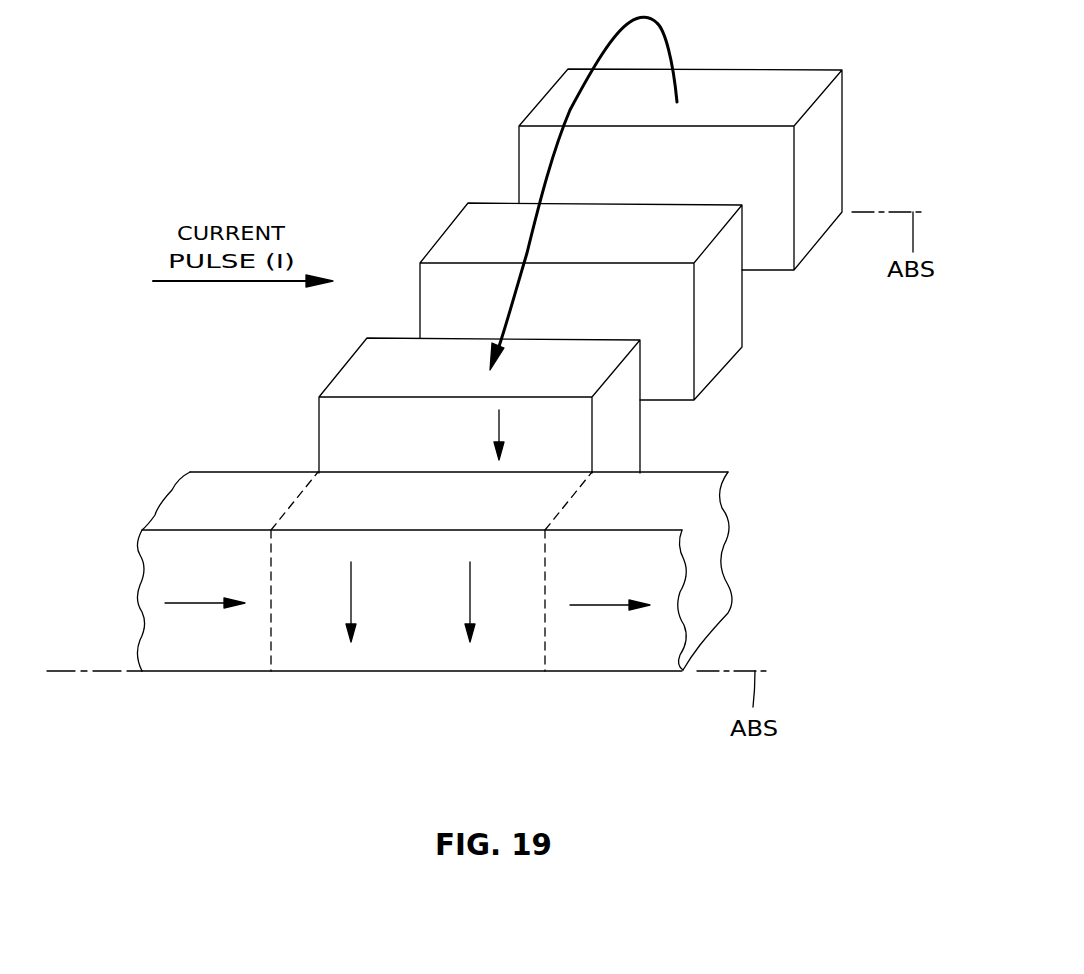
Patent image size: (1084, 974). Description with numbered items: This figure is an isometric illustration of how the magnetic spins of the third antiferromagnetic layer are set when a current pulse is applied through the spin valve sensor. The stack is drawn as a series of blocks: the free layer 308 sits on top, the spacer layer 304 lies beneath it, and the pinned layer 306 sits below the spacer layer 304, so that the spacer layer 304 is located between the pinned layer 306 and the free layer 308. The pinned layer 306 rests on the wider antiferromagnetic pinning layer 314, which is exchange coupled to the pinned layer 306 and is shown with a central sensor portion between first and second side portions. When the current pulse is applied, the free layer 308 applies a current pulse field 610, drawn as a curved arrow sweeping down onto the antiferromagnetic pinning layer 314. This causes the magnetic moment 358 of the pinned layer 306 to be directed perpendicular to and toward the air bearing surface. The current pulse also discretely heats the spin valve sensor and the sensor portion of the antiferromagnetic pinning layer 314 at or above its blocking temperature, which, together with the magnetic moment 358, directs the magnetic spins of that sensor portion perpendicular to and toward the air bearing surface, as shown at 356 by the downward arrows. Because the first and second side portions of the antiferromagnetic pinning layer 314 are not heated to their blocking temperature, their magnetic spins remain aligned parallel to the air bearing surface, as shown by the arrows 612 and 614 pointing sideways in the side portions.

The free layer 308 is at (530, 150).
The spacer layer 304 is at (465, 233).
The pinned layer 306 is at (332, 427).
The third antiferromagnetic layer 314 is at (157, 560).
The magnetic moment of the pinned layer 358 is at (497, 423).
The magnetic spins of the sensor portion of the AFM pinning layer 356 is at (470, 585).
The current pulse field 610 is at (612, 36).
The arrow indicating magnetic spins of the first side portion of the AFM pinning lay 612 is at (195, 605).
The arrow indicating magnetic spins of the second side portion of the AFM pinning la 614 is at (597, 607).